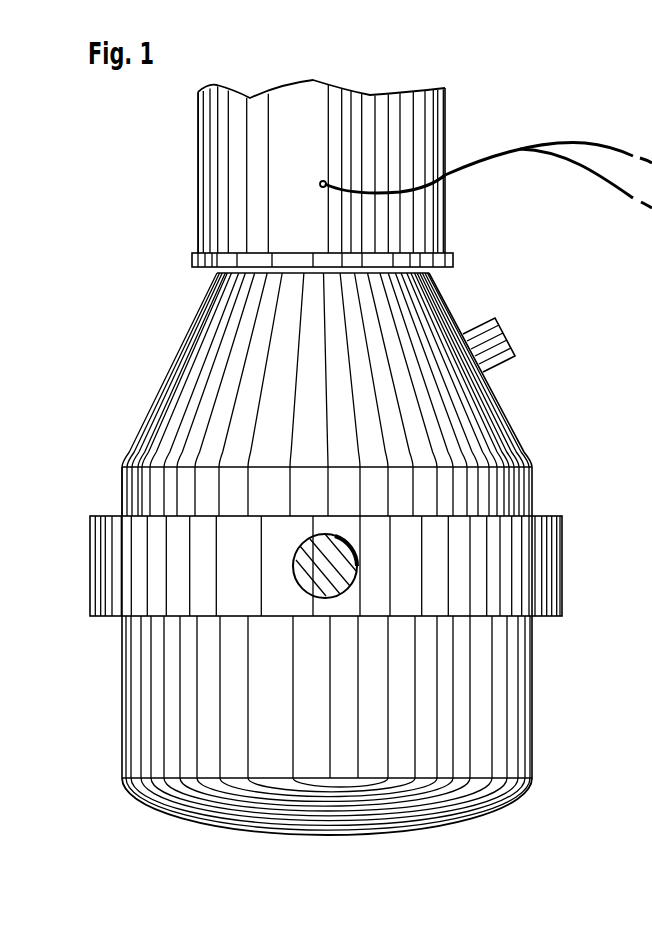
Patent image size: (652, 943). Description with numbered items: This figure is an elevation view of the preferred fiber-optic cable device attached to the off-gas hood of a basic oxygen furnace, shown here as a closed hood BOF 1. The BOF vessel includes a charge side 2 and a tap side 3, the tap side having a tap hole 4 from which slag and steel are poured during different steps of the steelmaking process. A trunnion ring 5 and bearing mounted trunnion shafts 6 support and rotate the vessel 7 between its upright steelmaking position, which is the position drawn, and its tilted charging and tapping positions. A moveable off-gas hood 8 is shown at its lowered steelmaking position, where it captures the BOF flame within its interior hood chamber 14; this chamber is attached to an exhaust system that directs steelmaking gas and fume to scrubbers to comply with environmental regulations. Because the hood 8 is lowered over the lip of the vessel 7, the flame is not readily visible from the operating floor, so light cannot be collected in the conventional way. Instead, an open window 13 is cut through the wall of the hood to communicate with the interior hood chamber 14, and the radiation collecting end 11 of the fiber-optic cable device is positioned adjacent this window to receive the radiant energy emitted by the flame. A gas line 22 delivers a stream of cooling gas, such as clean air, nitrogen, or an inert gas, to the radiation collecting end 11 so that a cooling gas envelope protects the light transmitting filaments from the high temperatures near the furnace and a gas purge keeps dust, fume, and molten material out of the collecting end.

The closed hood BOF 1 is at (166, 204).
The charge side 2 is at (177, 305).
The tap side 3 is at (470, 303).
The tap hole 4 is at (510, 362).
The trunnion ring 5 is at (540, 570).
The trunnion shafts 6 is at (320, 572).
The vessel 7 is at (487, 710).
The off-gas hood 8 is at (440, 122).
The radiation collecting end 11 is at (322, 189).
The open window 13 is at (318, 176).
The interior hood chamber 14 is at (298, 104).
The gas line 22 is at (651, 210).